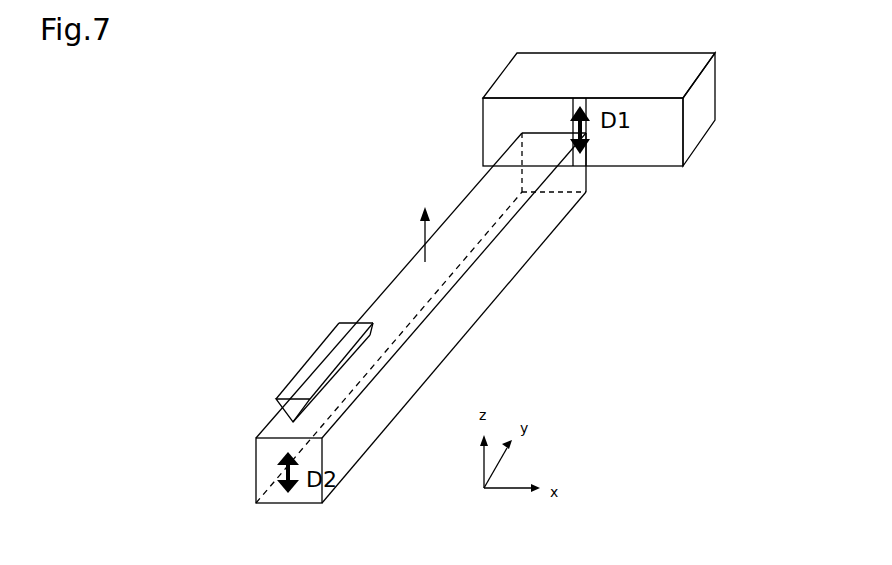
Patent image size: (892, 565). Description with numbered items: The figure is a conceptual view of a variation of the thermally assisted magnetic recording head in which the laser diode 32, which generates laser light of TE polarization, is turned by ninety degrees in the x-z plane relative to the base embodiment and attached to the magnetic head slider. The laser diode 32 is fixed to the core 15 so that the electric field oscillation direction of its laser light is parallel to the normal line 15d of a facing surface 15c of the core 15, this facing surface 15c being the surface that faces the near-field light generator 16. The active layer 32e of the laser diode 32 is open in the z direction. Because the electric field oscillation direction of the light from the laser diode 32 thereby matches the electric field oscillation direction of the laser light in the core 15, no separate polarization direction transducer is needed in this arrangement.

The core 15 is at (421, 318).
The facing surface 15c is at (412, 273).
The normal line 15d is at (422, 220).
The near-field light generator 16 is at (318, 367).
The laser diode 32 is at (705, 90).
The active layer 32e is at (576, 157).